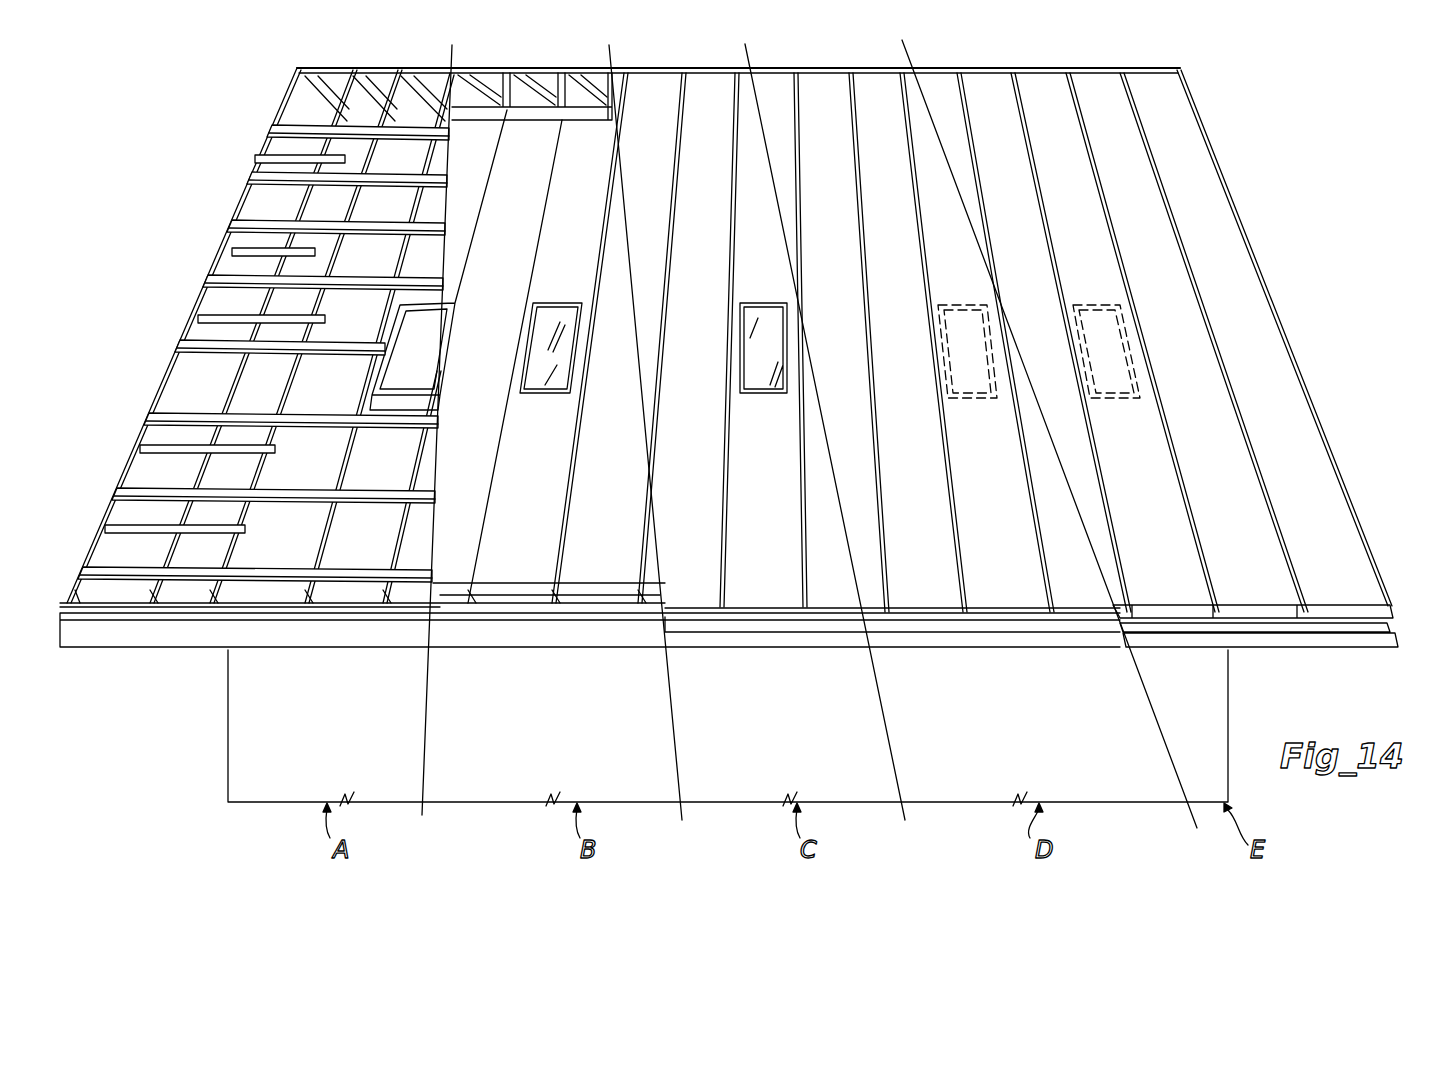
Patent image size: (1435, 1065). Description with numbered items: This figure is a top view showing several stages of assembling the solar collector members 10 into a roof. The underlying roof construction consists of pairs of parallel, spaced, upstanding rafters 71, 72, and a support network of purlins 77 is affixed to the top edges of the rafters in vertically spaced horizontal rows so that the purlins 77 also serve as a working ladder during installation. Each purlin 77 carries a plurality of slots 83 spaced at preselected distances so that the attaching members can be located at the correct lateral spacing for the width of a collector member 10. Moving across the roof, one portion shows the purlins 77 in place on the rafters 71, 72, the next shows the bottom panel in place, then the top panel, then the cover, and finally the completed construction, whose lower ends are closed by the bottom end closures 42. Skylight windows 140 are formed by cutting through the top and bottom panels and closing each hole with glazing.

The solar collector member 10 is at (1083, 64).
The bottom end closure 42 is at (1350, 608).
The rafter 71 is at (142, 606).
The rafter 72 is at (207, 605).
The purlin 77 is at (372, 287).
The slot 83 is at (335, 493).
The skylight window 140 is at (1118, 394).